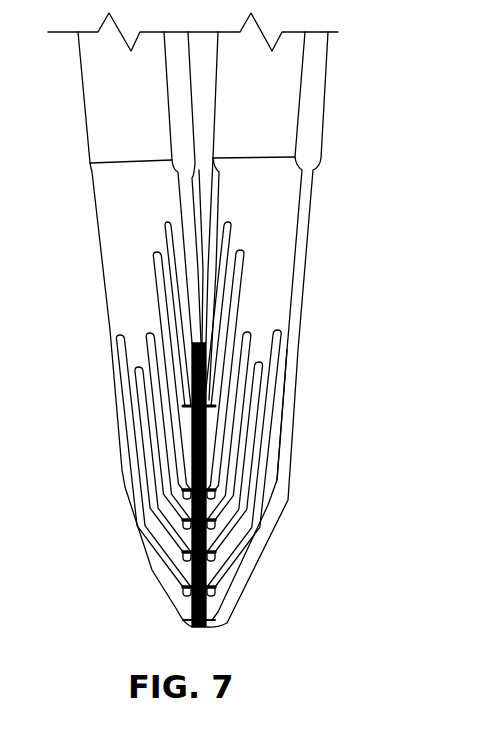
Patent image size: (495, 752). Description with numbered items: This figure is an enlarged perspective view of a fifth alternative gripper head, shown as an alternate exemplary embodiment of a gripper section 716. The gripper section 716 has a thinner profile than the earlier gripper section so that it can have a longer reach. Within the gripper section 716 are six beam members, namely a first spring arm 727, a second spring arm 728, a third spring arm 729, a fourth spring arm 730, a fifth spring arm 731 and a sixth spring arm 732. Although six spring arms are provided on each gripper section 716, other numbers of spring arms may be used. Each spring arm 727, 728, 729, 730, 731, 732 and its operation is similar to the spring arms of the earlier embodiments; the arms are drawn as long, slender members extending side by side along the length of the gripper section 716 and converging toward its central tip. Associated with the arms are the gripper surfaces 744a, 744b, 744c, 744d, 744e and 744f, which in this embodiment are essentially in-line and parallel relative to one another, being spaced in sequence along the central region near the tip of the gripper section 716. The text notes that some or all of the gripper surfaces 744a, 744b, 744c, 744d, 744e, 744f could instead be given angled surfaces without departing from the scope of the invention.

The gripper section 716 is at (362, 106).
The first beam member or spring arm 727 is at (217, 240).
The second beam member or spring arm 728 is at (230, 265).
The third beam member or spring arm 729 is at (250, 338).
The fourth beam member or spring arm 730 is at (252, 380).
The fifth beam member or spring arm 731 is at (262, 405).
The sixth beam member or spring arm 732 is at (277, 433).
The gripper surface 744a is at (196, 377).
The gripper surface 744b is at (195, 445).
The gripper surface 744c is at (193, 490).
The gripper surface 744d is at (193, 525).
The gripper surface 744e is at (193, 560).
The gripper surface 744f is at (193, 596).